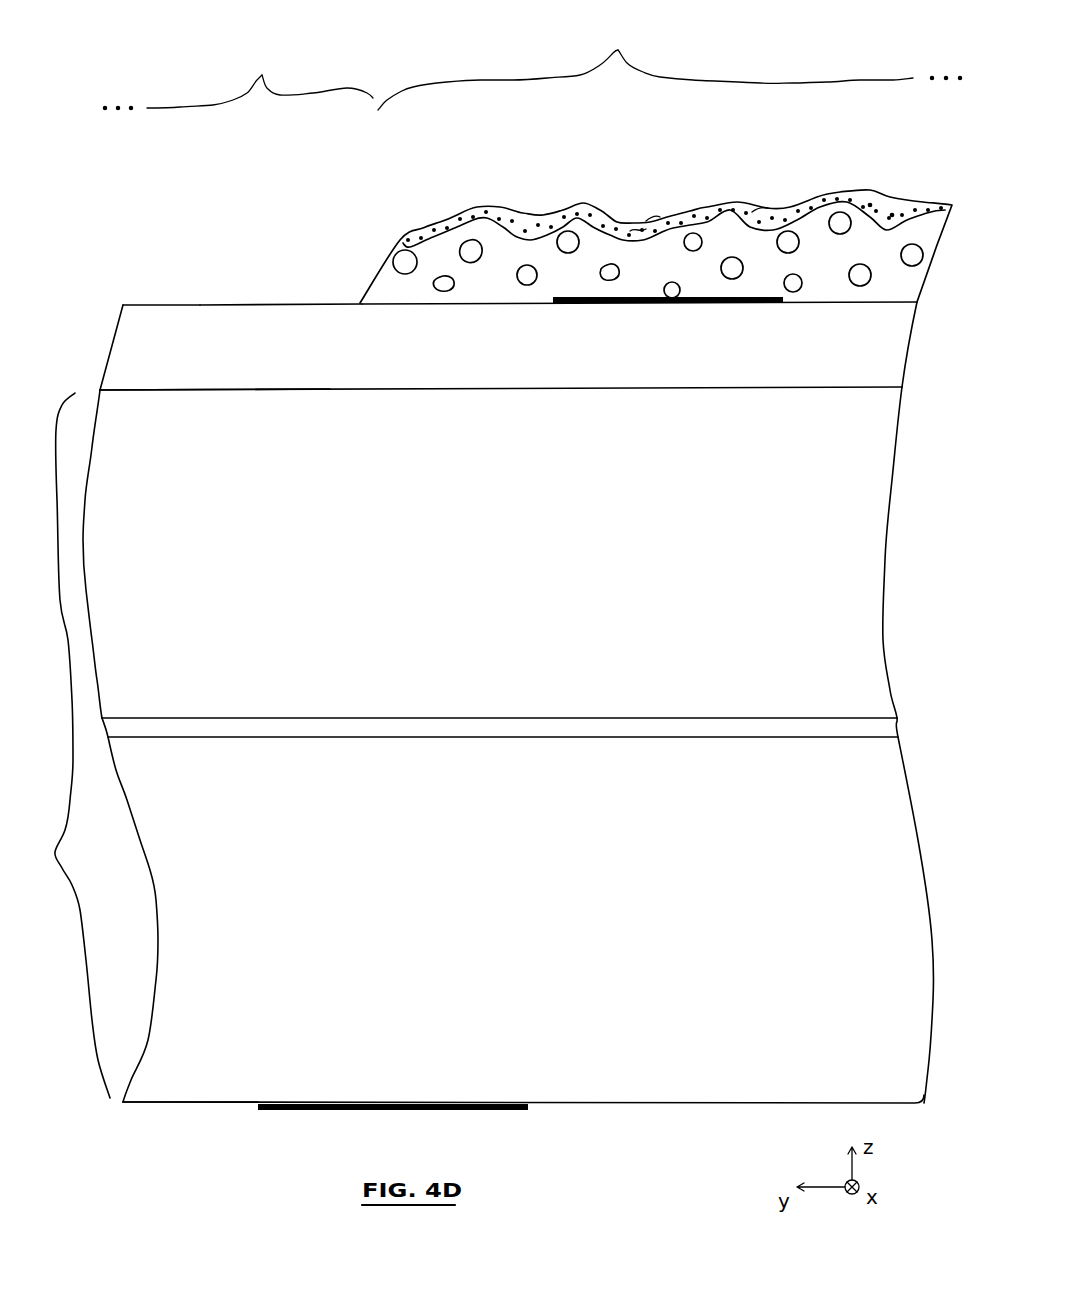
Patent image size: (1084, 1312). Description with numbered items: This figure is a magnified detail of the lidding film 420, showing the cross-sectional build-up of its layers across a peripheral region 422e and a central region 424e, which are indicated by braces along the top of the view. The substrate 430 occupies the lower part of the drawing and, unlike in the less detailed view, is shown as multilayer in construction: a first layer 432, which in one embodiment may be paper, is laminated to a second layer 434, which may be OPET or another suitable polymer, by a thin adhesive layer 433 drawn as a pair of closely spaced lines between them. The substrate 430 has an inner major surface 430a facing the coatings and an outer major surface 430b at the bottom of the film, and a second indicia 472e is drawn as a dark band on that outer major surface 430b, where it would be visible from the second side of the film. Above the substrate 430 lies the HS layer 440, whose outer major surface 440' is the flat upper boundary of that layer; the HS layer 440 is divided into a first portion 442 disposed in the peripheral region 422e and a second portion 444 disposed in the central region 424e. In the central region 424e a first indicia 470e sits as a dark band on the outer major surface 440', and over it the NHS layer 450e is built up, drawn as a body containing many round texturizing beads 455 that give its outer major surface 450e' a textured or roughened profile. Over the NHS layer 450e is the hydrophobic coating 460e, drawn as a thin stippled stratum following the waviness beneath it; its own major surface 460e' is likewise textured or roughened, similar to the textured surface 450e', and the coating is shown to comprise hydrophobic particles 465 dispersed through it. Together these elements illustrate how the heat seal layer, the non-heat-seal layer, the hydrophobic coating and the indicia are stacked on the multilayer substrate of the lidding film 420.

The lidding film 420 is at (400, 28).
The peripheral region 422e is at (260, 75).
The central region 424e is at (645, 66).
The substrate 430 is at (43, 857).
The inner major surface of substrate 430a is at (267, 396).
The outer major surface of substrate 430b is at (205, 1086).
The first layer 432 is at (466, 908).
The adhesive layer 433 is at (420, 725).
The second layer 434 is at (468, 553).
The HS layer 440 is at (508, 346).
The outer major surface of HS layer 440' is at (281, 288).
The first portion of HS layer 442 is at (178, 328).
The second portion of HS layer 444 is at (598, 372).
The NHS layer 450e is at (656, 222).
The outer major surface of NHS layer 450e' is at (645, 194).
The texturizing beads 455 is at (443, 292).
The hydrophobic coating 460e is at (792, 188).
The textured major surface of hydrophobic coating 460e' is at (684, 199).
The hydrophobic particles 465 is at (903, 210).
The first indicia 470e is at (700, 305).
The second indicia 472e is at (470, 1110).